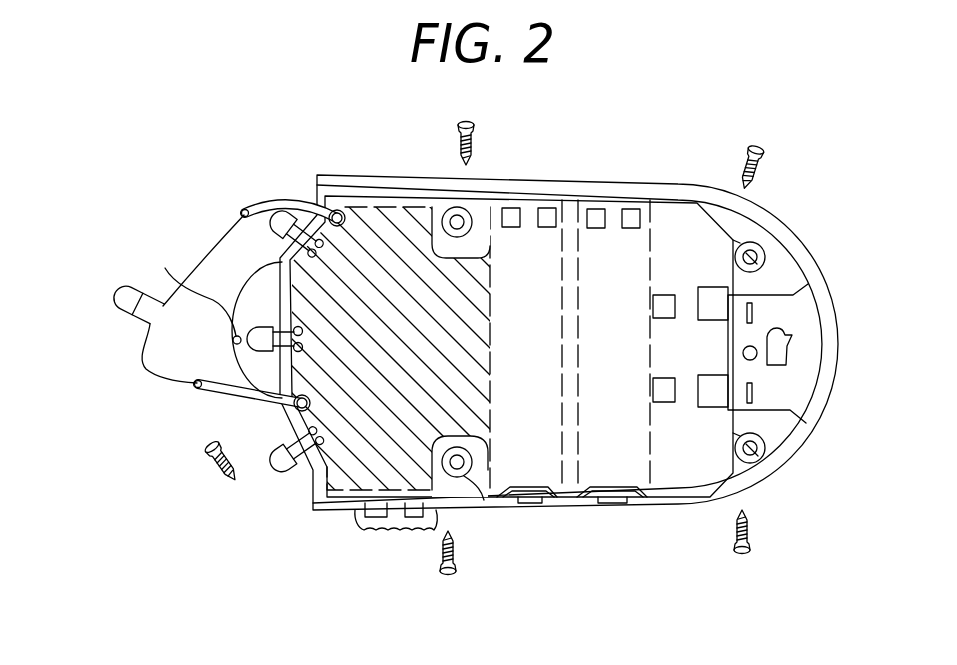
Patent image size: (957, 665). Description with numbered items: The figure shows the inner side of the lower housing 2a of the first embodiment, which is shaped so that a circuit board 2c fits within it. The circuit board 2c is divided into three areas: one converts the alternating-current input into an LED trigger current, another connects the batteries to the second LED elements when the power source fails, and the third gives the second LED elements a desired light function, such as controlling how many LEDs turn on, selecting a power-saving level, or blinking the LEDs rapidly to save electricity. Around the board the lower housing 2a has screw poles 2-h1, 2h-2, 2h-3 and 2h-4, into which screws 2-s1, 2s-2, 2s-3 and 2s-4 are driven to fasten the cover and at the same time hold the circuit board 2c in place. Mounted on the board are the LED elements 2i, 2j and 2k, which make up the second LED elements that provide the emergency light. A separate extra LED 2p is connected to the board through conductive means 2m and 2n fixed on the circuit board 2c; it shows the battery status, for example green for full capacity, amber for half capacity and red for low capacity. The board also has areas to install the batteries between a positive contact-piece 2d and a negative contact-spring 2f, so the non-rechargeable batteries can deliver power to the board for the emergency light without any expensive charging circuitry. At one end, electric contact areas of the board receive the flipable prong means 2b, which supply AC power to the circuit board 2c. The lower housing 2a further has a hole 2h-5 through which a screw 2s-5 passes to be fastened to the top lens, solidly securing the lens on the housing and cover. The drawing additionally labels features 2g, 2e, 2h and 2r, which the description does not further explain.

The lower housing 2a is at (328, 181).
The screw pole 2-h1 is at (446, 212).
The screw 2-s1 is at (454, 142).
The circuit board region 2g is at (487, 245).
The positive contact-piece 2d is at (548, 208).
The negative contact-spring 2f is at (607, 262).
The circuit board 2c is at (674, 222).
The screw 2s-2 is at (759, 168).
The screw pole 2h-2 is at (754, 252).
The flipable prong means 2b is at (797, 317).
The screw pole 2h-3 is at (757, 457).
The screw 2s-3 is at (750, 545).
The mounting brackets 2e is at (614, 500).
The screw pole 2h-4 is at (484, 500).
The screw 2s-4 is at (448, 577).
The latch tabs 2h is at (380, 536).
The screw 2s-5 is at (217, 465).
The fastening portion 2r is at (145, 465).
The LED element 2i is at (281, 465).
The conductive means 2m is at (228, 388).
The LED element 2j is at (250, 353).
The extra LED 2p is at (122, 298).
The hole 2h-5 is at (208, 319).
The LED element 2k is at (275, 238).
The conductive means 2n is at (262, 205).